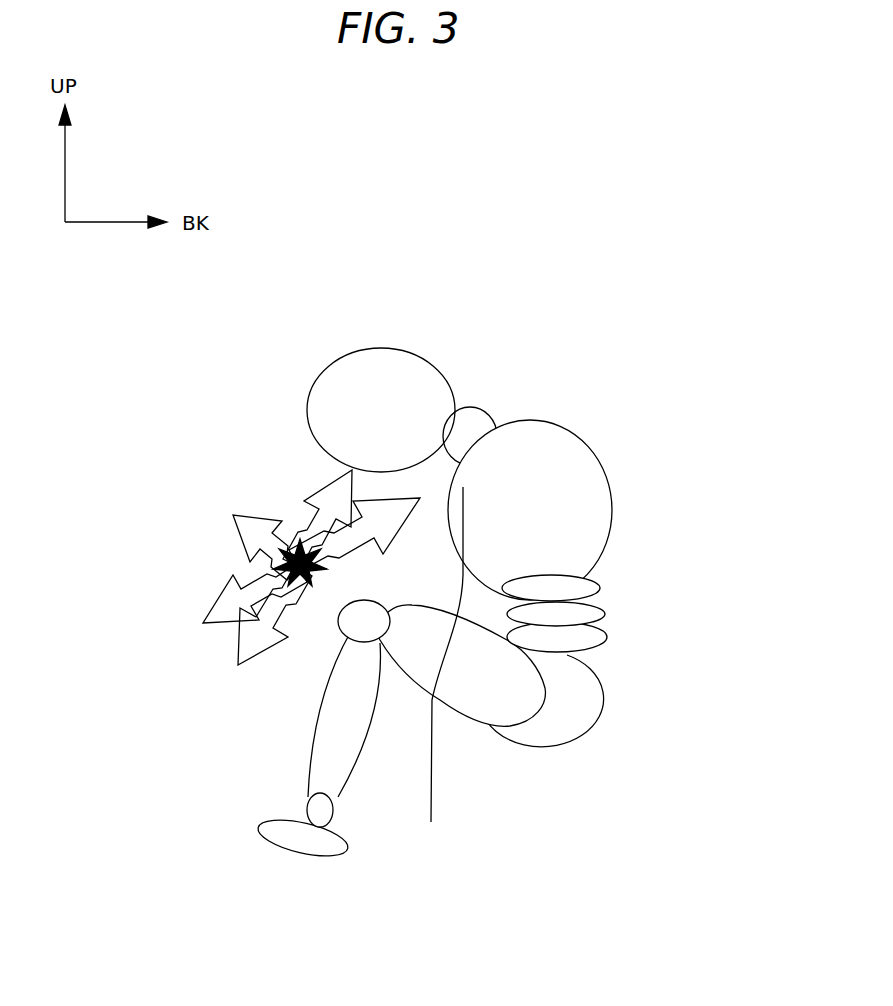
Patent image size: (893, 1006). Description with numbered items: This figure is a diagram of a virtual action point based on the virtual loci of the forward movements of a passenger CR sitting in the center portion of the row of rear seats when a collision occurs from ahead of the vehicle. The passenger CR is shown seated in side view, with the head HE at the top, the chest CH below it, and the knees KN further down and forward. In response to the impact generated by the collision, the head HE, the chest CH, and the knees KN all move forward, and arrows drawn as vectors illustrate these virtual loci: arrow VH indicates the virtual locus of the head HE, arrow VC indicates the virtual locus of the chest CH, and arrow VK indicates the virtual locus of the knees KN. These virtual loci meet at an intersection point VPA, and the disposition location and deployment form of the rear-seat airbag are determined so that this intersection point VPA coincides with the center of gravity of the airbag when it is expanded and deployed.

The head HE is at (387, 385).
The passenger CR is at (585, 620).
The knees KN is at (367, 618).
The chest CH is at (438, 672).
The arrow VH is at (330, 495).
The arrow VK is at (253, 532).
The intersection point VPA is at (253, 553).
The arrow VC is at (237, 602).